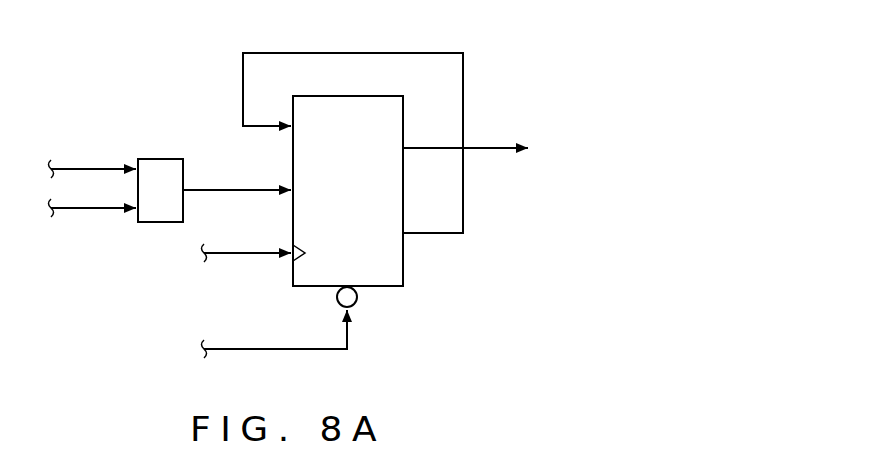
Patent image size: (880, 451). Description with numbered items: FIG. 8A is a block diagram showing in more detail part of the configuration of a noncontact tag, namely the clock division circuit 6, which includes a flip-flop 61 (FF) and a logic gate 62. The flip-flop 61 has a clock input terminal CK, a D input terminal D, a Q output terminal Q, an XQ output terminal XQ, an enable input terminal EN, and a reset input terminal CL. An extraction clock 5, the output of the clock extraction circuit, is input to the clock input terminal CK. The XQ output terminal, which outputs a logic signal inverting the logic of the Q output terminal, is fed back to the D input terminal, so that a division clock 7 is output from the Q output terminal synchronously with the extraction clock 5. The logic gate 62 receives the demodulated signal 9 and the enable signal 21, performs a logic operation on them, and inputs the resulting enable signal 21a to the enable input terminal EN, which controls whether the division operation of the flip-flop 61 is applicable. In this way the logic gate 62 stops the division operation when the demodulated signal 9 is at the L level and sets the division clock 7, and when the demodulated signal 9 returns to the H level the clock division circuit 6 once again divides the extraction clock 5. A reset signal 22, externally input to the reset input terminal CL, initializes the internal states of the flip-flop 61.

The clock division circuit 6 is at (582, 16).
The flip-flop 61 is at (390, 268).
The logic gate 62 is at (155, 222).
The division clock 7 is at (492, 147).
The demodulated signal 9 is at (73, 167).
The enable signal 21 is at (75, 210).
The enable signal 21a is at (219, 190).
The extraction clock 5 is at (215, 255).
The reset signal 22 is at (275, 343).